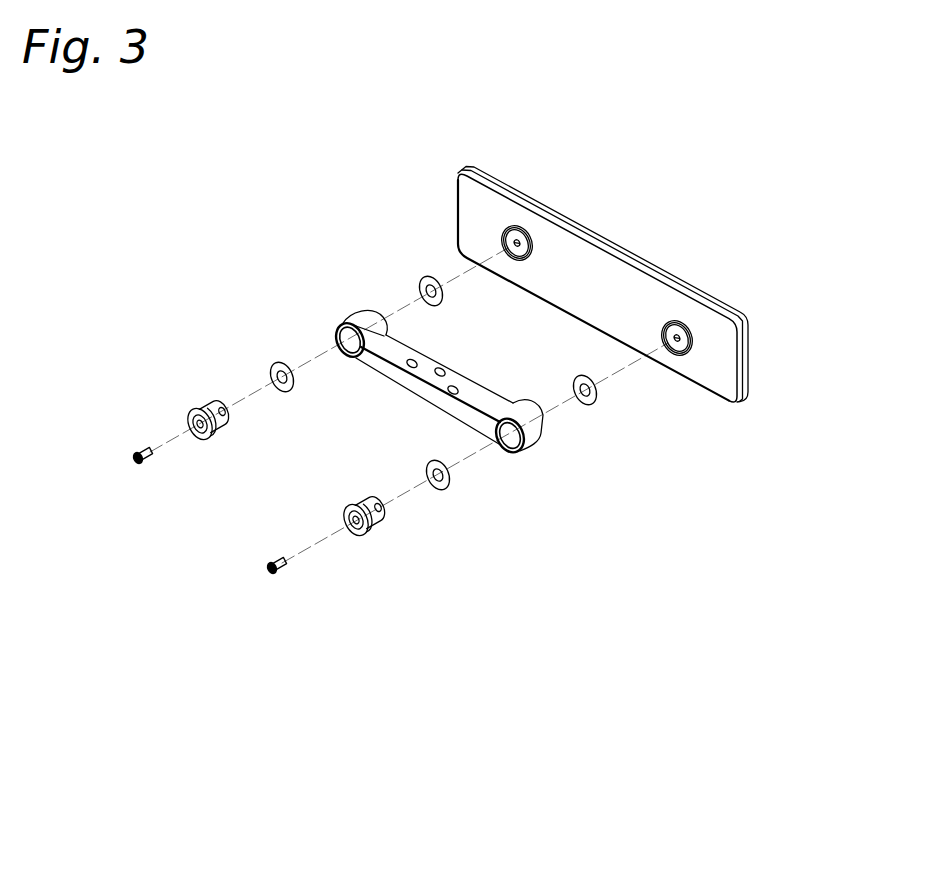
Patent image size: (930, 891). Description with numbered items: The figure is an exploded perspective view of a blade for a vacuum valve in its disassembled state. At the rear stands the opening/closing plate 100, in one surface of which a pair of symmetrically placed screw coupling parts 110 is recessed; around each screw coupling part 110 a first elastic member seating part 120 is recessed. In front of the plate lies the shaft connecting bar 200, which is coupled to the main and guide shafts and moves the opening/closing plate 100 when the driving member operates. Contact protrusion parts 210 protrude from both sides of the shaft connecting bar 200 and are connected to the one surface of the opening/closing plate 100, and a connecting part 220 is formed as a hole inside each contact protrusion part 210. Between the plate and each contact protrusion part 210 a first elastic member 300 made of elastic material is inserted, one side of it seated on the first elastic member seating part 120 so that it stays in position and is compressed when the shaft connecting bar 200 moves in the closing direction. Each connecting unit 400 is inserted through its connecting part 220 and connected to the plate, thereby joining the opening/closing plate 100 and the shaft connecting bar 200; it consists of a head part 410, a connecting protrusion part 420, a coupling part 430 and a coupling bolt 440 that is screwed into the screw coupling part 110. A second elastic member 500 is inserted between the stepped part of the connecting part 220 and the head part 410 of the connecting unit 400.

The opening/closing plate 100 is at (593, 273).
The screw coupling part 110 is at (519, 242).
The first elastic member seating part 120 is at (505, 230).
The shaft connecting bar 200 is at (427, 383).
The contact protrusion part 210 is at (357, 318).
The connecting part 220 is at (344, 327).
The first elastic member 300 is at (425, 280).
The connecting unit 400 is at (128, 383).
The head part 410 is at (192, 412).
The connecting protrusion part 420 is at (216, 400).
The coupling part 430 is at (189, 422).
The coupling bolt 440 is at (92, 436).
The second elastic member 500 is at (274, 363).